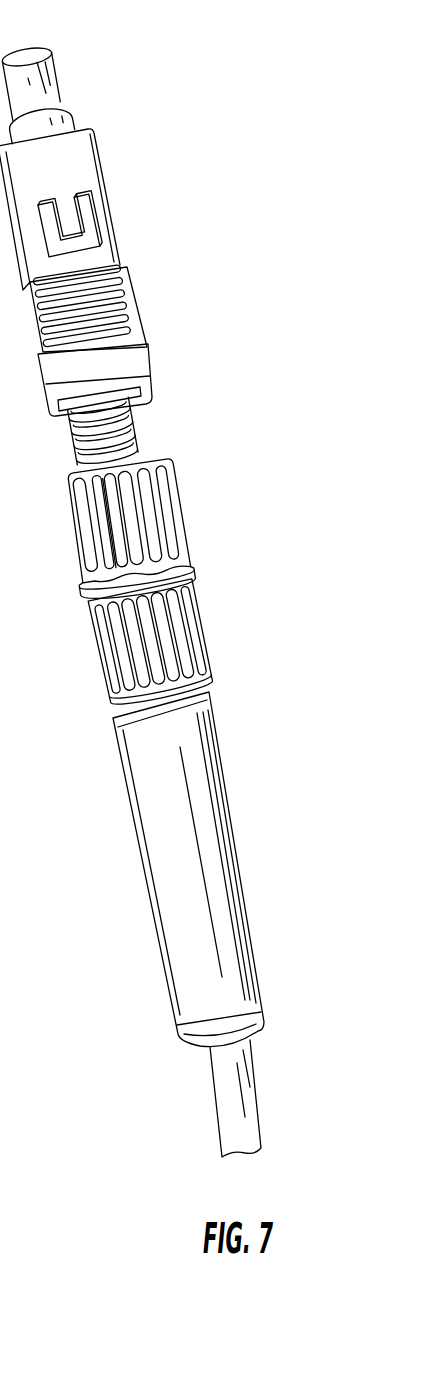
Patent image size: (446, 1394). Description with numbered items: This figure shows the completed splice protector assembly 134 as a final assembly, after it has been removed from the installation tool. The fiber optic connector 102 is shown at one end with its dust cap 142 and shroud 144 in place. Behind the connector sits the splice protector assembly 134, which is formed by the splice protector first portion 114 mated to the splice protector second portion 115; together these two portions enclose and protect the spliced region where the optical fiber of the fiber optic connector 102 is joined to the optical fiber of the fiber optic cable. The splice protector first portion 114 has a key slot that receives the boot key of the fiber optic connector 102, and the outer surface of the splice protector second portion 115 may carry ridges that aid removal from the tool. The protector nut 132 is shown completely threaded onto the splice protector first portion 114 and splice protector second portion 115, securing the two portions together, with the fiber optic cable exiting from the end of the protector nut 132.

The fiber optic connector 102 is at (148, 427).
The splice protector first portion 114 is at (93, 550).
The splice protector second portion 115 is at (183, 533).
The protector nut 132 is at (195, 815).
The splice protector assembly 134 is at (197, 494).
The dust cap 142 is at (40, 83).
The shroud 144 is at (90, 258).